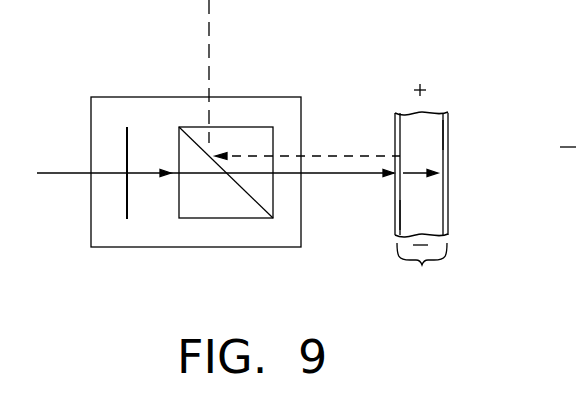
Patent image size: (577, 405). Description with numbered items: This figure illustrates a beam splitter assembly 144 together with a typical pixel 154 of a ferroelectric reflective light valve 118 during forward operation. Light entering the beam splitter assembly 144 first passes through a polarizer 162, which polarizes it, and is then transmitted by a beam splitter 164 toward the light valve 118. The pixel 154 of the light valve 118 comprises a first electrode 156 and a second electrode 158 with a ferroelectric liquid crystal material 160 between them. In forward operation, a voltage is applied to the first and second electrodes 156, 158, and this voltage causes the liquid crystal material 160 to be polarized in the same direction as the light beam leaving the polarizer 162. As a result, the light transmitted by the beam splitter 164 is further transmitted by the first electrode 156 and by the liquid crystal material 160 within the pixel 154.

The beam splitter assembly 144 is at (262, 90).
The polarizer 162 is at (127, 143).
The beam splitter 164 is at (225, 220).
The ferroelectric reflective light valve 118 is at (456, 195).
The ferroelectric liquid crystal material 160 is at (430, 112).
The second electrode 158 is at (448, 135).
The first electrode 156 is at (394, 213).
The pixel 154 is at (422, 265).